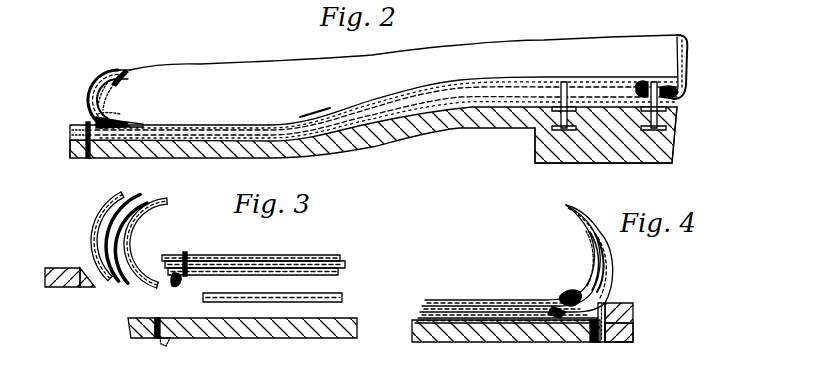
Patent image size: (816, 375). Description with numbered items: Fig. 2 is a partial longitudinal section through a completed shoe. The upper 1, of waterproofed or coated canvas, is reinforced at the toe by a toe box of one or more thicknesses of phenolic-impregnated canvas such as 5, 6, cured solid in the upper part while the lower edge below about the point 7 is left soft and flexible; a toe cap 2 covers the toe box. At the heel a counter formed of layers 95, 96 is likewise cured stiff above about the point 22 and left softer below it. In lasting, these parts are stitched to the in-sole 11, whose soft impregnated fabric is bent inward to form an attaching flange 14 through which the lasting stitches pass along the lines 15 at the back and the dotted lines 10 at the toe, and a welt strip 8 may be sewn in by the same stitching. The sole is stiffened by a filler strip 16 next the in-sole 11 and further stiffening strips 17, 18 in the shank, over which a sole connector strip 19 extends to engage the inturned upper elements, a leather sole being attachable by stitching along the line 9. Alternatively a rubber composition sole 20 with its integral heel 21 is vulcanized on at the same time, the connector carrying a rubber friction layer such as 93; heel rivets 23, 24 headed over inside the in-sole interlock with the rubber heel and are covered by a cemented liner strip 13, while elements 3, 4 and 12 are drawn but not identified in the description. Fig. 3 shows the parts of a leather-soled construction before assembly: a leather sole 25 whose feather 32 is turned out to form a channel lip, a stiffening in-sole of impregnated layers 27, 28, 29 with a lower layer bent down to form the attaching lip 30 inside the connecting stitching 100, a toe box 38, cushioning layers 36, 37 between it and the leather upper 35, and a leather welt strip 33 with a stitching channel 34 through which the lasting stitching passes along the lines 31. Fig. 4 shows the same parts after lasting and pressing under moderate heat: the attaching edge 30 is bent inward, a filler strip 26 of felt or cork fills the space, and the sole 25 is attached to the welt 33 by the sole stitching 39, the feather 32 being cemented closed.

In FIG. 2, the upper 1 is at (104, 78).
In FIG. 2, the toe cap 2 is at (87, 93).
In FIG. 2, the counter 3 is at (676, 47).
In FIG. 2, the counter lining 4 is at (691, 45).
In FIG. 2, the impregnated canvas thickness 5 is at (115, 73).
In FIG. 2, the impregnated canvas thickness 6 is at (120, 72).
In FIG. 2, the point 7 is at (100, 117).
In FIG. 2, the welt strip 8 is at (78, 125).
In FIG. 2, the stitching line 9 is at (85, 158).
In FIG. 2, the dotted lines 10 is at (92, 123).
In FIG. 2, the in-sole 11 is at (250, 127).
In FIG. 2, the toe wedge 12 is at (118, 121).
In FIG. 2, the liner strip 13 is at (602, 80).
In FIG. 2, the attaching flange 14 is at (644, 82).
In FIG. 2, the lines 15 is at (684, 95).
In FIG. 2, the filler strip 16 is at (312, 125).
In FIG. 2, the stiffening strip 17 is at (452, 107).
In FIG. 2, the stiffening strip 18 is at (485, 105).
In FIG. 2, the sole connector strip 19 is at (375, 143).
In FIG. 2, the rubber composition sole 20 is at (409, 138).
In FIG. 2, the heel 21 is at (672, 146).
In FIG. 2, the point 22 is at (687, 76).
In FIG. 2, the heel rivet 23 is at (677, 117).
In FIG. 2, the heel rivet 24 is at (564, 82).
In FIG. 3, the leather sole 25 is at (343, 320).
In FIG. 4, the leather sole 25 is at (482, 335).
In FIG. 3, the filler strip 26 is at (340, 293).
In FIG. 4, the filler strip 26 is at (450, 318).
In FIG. 3, the impregnated fabric layer 27 is at (193, 262).
In FIG. 4, the impregnated fabric layer 27 is at (478, 278).
In FIG. 3, the impregnated fabric layer 28 is at (232, 265).
In FIG. 4, the impregnated fabric layer 28 is at (483, 308).
In FIG. 3, the impregnated fabric layer 29 is at (288, 273).
In FIG. 4, the impregnated fabric layer 29 is at (510, 312).
In FIG. 3, the attaching lip 30 is at (180, 282).
In FIG. 4, the attaching lip 30 is at (557, 313).
In FIG. 3, the lasting stitching lines 31 is at (152, 282).
In FIG. 4, the lasting stitching lines 31 is at (592, 295).
In FIG. 3, the feather 32 is at (165, 342).
In FIG. 4, the feather 32 is at (616, 345).
In FIG. 3, the welt strip 33 is at (53, 265).
In FIG. 4, the welt strip 33 is at (632, 320).
In FIG. 3, the stitching channel 34 is at (103, 273).
In FIG. 4, the stitching channel 34 is at (598, 330).
In FIG. 3, the shoe upper 35 is at (98, 222).
In FIG. 4, the shoe upper 35 is at (609, 282).
In FIG. 3, the cushioning layer 36 is at (140, 196).
In FIG. 4, the cushioning layer 36 is at (607, 265).
In FIG. 3, the cushioning layer 37 is at (150, 202).
In FIG. 4, the cushioning layer 37 is at (605, 255).
In FIG. 3, the toe box 38 is at (168, 207).
In FIG. 4, the toe box 38 is at (585, 245).
In FIG. 3, the sole stitching 39 is at (160, 320).
In FIG. 4, the sole stitching 39 is at (609, 298).
In FIG. 2, the rubber coating or friction layer 93 is at (250, 5).
In FIG. 2, the counter layer 95 is at (684, 40).
In FIG. 2, the counter layer 96 is at (687, 40).
In FIG. 3, the connecting stitching 100 is at (185, 258).
In FIG. 4, the connecting stitching 100 is at (570, 295).